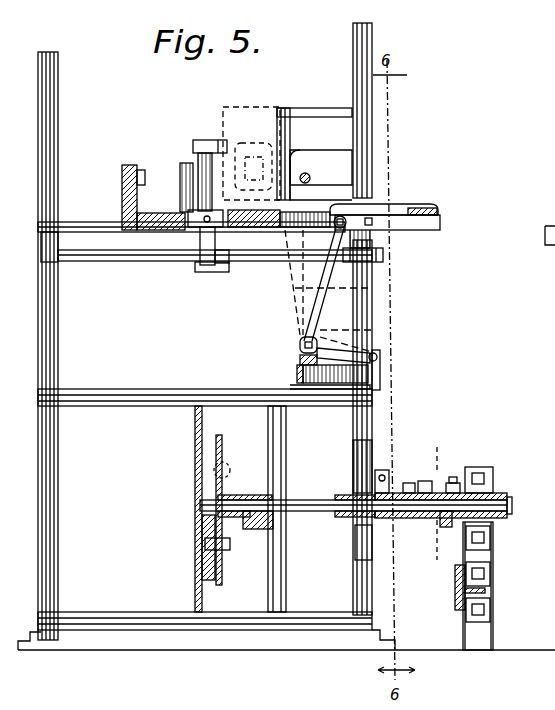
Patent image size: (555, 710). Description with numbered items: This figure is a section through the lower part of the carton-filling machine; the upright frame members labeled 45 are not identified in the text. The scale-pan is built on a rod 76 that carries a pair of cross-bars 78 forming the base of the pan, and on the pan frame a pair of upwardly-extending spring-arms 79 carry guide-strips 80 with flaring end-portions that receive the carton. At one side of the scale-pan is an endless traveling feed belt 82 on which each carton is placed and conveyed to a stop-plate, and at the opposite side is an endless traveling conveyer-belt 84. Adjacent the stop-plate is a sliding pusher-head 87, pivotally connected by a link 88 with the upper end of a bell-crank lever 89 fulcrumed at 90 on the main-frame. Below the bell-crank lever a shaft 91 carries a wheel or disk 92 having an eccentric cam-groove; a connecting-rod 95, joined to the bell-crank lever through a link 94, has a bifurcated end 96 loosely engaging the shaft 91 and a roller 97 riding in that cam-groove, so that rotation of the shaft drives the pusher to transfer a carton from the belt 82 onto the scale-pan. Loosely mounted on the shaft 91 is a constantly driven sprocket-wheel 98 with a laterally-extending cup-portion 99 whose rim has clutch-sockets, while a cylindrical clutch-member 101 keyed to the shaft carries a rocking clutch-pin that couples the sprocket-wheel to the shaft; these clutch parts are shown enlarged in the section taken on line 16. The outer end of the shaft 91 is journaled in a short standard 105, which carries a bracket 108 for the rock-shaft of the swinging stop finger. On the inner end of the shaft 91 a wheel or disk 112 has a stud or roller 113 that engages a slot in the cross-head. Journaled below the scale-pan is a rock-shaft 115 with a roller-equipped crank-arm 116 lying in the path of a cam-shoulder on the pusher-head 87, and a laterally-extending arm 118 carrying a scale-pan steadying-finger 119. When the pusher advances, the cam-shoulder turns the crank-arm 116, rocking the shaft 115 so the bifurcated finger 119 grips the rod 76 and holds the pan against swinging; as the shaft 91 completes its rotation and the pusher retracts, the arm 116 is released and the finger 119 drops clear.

The frame column 45 is at (352, 111).
The rod 76 is at (180, 268).
The cross-bars 78 is at (178, 212).
The spring-arms 79 is at (186, 160).
The guide-strips 80 is at (203, 140).
The endless traveling belt 82 is at (258, 228).
The endless traveling conveyer-belt 84 is at (157, 213).
The sliding pusher-head 87 is at (250, 153).
The link 88 is at (350, 213).
The bell-crank lever 89 is at (372, 290).
The fulcrum 90 is at (300, 346).
The shaft 91 is at (300, 503).
The wheel or disk 92 is at (349, 585).
The link 94 is at (377, 368).
The connecting-rod 95 is at (372, 413).
The bifurcated end 96 is at (378, 542).
The roller 97 is at (388, 478).
The sprocket-wheel 98 is at (410, 483).
The cup-portion 99 is at (426, 482).
The cylindrical clutch-member 101 is at (452, 483).
The short standard 105 is at (493, 551).
The bracket 108 is at (458, 584).
The wheel or disk 112 is at (222, 582).
The stud or roller 113 is at (225, 465).
The rock-shaft 115 is at (92, 265).
The crank-arm 116 is at (383, 254).
The arm 118 is at (214, 236).
The scale-pan steadying-finger 119 is at (203, 238).
The section line 16 is at (438, 505).